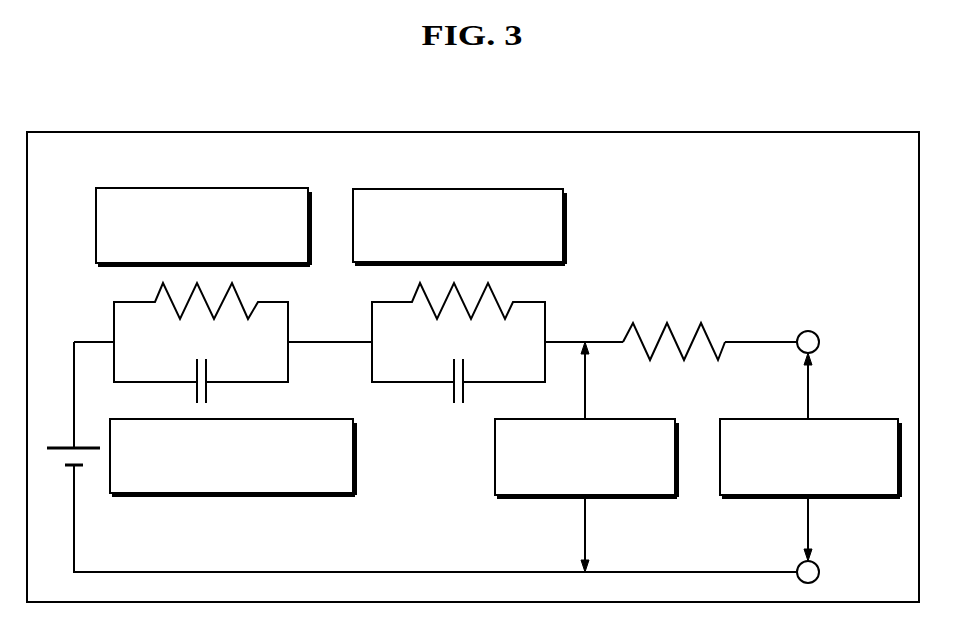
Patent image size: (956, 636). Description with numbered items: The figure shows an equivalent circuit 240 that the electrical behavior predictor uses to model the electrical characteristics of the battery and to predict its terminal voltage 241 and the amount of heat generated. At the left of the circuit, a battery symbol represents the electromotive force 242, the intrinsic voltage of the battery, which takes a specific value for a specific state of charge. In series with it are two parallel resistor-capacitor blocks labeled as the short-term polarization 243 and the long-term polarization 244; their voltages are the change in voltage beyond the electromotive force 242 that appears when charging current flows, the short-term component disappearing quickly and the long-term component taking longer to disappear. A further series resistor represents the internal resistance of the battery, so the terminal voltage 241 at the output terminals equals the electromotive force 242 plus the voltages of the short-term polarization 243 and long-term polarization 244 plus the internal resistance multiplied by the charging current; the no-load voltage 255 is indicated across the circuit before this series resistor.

The equivalent circuit 240 is at (895, 130).
The terminal voltage 241 is at (873, 418).
The electromotive force 242 is at (356, 456).
The short-term polarization 243 is at (282, 187).
The long-term polarization 244 is at (538, 188).
The no-load voltage 255 is at (648, 418).